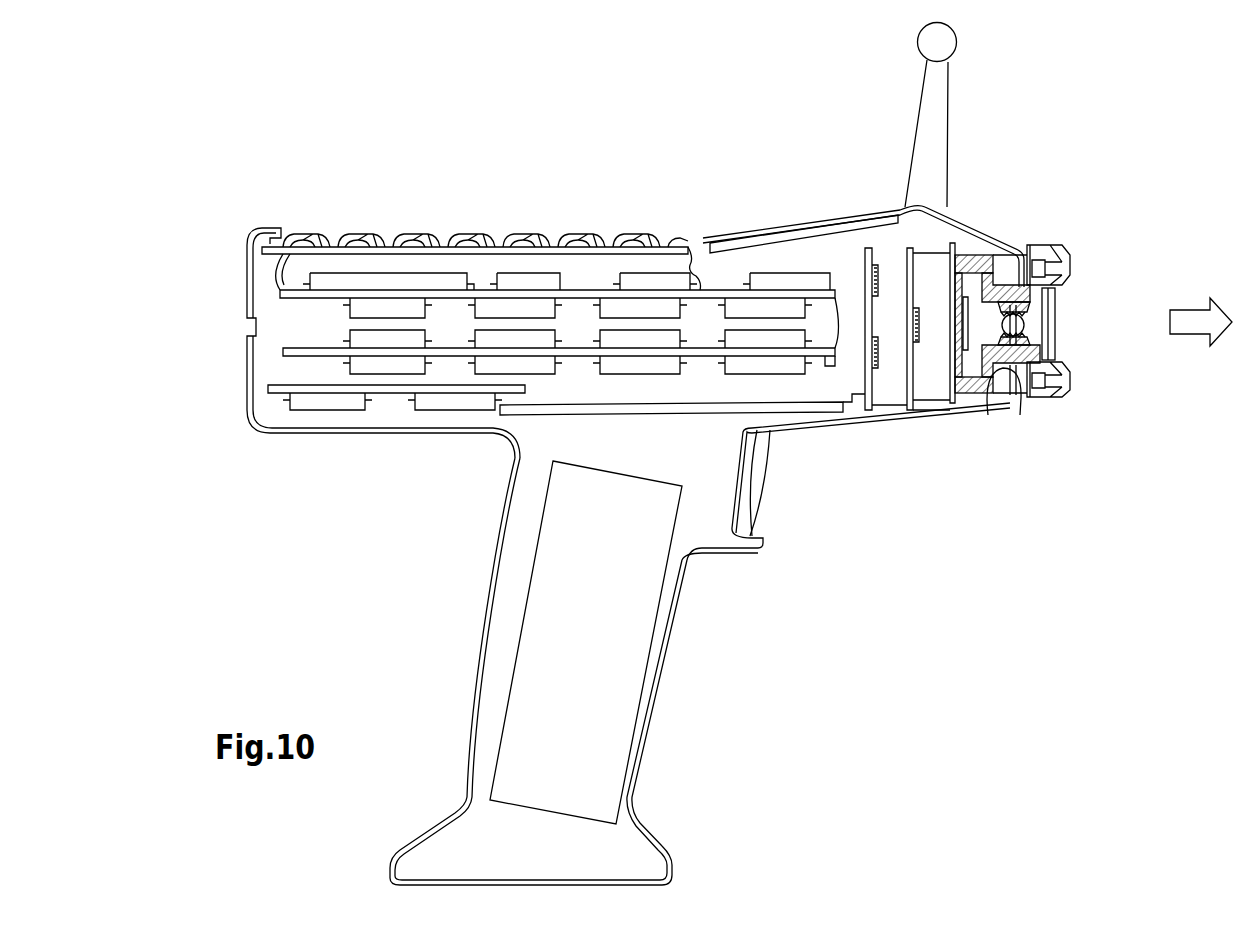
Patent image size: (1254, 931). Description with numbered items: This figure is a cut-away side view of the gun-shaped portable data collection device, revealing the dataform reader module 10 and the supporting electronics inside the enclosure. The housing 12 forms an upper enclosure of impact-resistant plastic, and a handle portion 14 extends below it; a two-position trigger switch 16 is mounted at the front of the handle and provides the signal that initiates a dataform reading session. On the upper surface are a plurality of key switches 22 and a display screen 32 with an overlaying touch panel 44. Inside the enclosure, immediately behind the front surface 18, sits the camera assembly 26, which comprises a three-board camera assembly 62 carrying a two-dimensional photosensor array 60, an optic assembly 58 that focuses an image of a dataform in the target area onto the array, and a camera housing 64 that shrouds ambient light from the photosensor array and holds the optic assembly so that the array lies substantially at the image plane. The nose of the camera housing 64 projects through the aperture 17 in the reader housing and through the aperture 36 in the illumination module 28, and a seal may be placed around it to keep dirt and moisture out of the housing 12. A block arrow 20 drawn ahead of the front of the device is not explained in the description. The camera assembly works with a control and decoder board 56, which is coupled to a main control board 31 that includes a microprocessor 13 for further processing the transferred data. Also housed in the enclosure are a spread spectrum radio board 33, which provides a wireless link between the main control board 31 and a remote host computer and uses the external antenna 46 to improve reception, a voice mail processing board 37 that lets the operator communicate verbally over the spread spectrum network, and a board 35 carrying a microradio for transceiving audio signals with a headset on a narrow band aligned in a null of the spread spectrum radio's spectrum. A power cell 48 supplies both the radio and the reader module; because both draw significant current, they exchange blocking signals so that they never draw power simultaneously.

The dataform reader module 10 is at (242, 185).
The housing 12 is at (250, 372).
The microprocessor 13 is at (362, 282).
The handle portion 14 is at (462, 722).
The two-position trigger switch 16 is at (743, 510).
The aperture 17 is at (1013, 400).
The front surface 18 is at (1003, 247).
The direction arrow 20 is at (1195, 338).
The key switches 22 is at (466, 234).
The camera assembly 26 is at (1036, 316).
The illumination module 28 is at (1062, 268).
The main control board 31 is at (300, 298).
The display screen 32 is at (757, 246).
The spread spectrum radio board 33 is at (285, 352).
The microradio board 35 is at (265, 392).
The aperture 36 is at (1052, 292).
The voice mail processing board 37 is at (705, 350).
The touch panel 44 is at (810, 230).
The external antenna 46 is at (950, 78).
The power cell 48 is at (600, 705).
The control and decoder board 56 is at (830, 415).
The optic assembly 58 is at (1020, 325).
The two dimensional photosensor array 60 is at (253, 285).
The board camera assembly 62 is at (920, 408).
The camera housing 64 is at (990, 398).